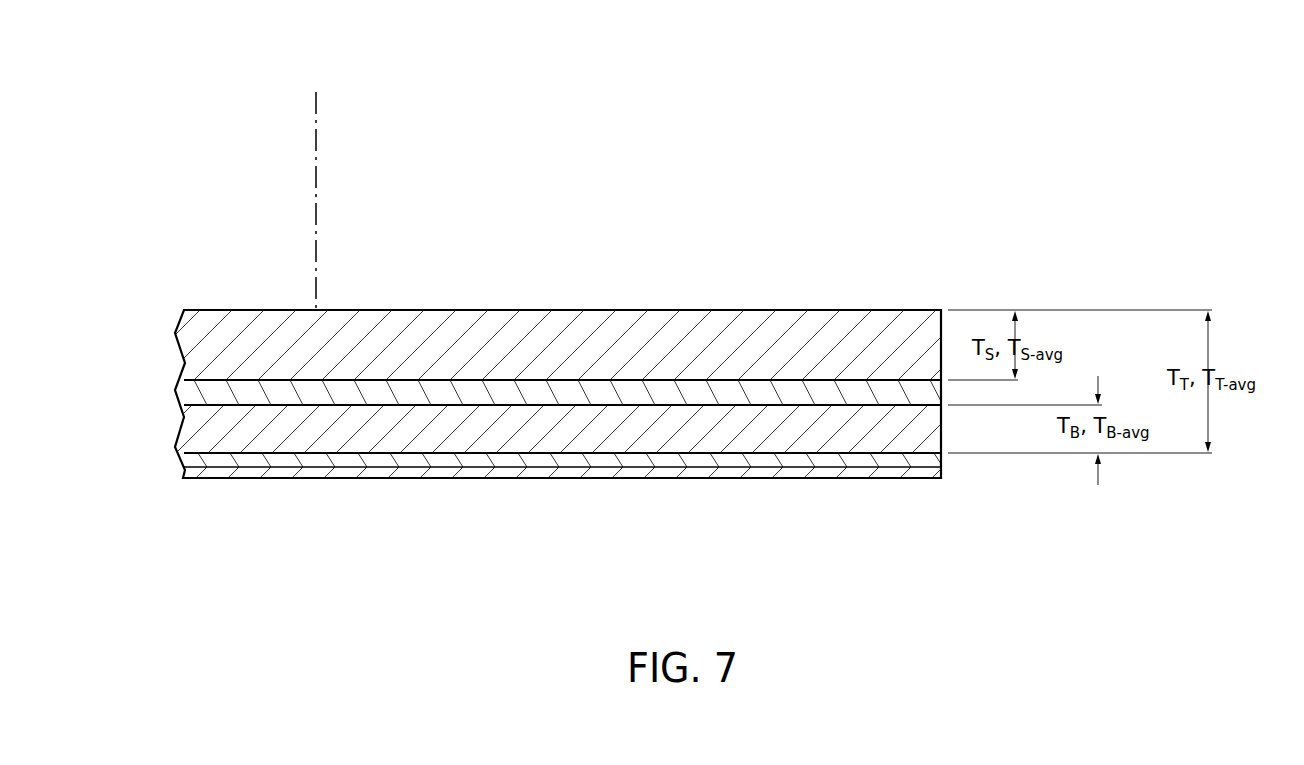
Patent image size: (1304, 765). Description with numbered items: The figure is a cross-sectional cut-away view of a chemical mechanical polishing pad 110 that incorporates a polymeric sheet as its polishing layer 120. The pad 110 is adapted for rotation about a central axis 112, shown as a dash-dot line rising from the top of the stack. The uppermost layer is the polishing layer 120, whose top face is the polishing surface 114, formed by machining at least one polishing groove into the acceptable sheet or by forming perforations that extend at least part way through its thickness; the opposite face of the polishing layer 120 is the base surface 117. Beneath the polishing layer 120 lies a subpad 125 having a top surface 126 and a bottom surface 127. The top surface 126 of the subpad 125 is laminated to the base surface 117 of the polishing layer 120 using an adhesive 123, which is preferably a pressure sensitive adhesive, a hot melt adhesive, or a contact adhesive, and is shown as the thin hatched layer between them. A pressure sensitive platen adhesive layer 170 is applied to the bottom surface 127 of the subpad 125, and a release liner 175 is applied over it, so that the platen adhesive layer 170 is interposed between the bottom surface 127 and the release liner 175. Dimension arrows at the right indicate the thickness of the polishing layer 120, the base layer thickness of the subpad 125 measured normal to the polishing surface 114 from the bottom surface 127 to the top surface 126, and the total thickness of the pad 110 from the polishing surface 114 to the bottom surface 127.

The chemical mechanical polishing pad 110 is at (534, 255).
The central axis 112 is at (317, 147).
The polishing surface 114 is at (480, 310).
The base surface 117 is at (433, 380).
The polishing layer 120 is at (565, 350).
The adhesive 123 is at (653, 392).
The subpad 125 is at (772, 440).
The top surface of the subpad 126 is at (687, 406).
The bottom surface of the subpad 127 is at (845, 455).
The pressure sensitive platen adhesive layer 170 is at (380, 460).
The release liner 175 is at (505, 470).